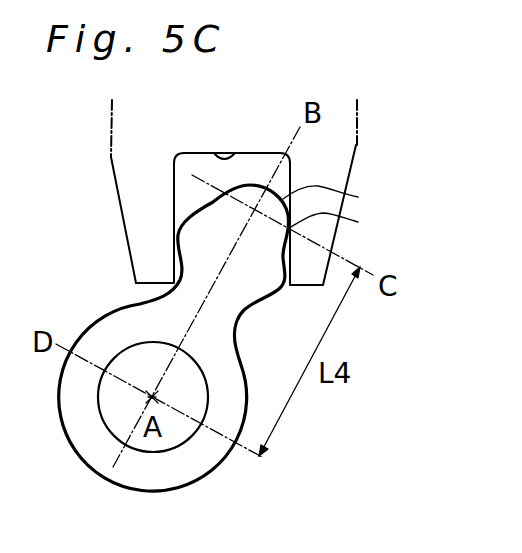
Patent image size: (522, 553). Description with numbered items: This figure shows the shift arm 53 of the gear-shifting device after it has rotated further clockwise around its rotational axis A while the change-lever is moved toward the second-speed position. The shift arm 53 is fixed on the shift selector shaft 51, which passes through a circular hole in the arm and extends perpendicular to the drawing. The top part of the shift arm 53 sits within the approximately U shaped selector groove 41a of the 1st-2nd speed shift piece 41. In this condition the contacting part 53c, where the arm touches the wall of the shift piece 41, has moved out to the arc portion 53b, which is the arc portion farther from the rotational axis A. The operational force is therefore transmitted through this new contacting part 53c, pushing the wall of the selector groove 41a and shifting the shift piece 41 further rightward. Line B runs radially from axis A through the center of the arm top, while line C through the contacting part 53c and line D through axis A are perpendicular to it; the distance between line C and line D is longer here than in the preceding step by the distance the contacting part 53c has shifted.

The 1st-2nd speed shift piece 41 is at (338, 149).
The selector groove 41a is at (220, 155).
The shift selector shaft 51 is at (117, 413).
The shift arm 53 is at (196, 458).
The arc portion 53b is at (350, 200).
The contacting part 53c is at (352, 232).